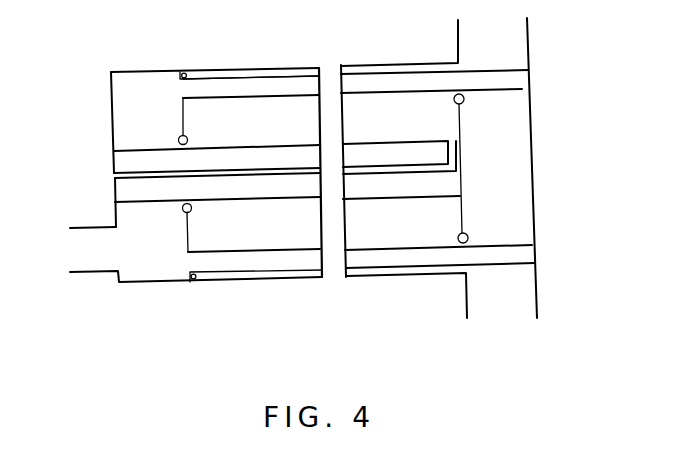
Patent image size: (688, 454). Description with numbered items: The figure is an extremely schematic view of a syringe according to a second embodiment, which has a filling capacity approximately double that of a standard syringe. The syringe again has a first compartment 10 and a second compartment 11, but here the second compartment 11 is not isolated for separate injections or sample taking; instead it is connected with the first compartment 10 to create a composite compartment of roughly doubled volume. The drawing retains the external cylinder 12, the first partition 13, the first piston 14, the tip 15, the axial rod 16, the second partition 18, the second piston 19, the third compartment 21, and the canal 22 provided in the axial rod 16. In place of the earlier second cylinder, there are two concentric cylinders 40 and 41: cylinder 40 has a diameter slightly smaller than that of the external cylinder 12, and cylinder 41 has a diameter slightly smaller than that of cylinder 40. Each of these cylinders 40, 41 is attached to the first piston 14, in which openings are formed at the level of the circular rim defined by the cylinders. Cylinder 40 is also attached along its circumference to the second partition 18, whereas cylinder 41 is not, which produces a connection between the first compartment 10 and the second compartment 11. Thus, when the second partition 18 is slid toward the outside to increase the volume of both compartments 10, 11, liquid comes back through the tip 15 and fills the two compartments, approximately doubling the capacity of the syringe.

The first compartment 10 is at (140, 83).
The second compartment 11 is at (507, 218).
The external cylinder 12 is at (155, 283).
The first partition 13 is at (112, 120).
The first piston 14 is at (183, 122).
The tip 15 is at (90, 273).
The axial rod 16 is at (245, 200).
The second partition 18 is at (530, 128).
The second piston 19 is at (459, 117).
The third compartment 21 is at (362, 222).
The canal 22 is at (400, 170).
The cylinder 40 is at (295, 78).
The cylinder 41 is at (360, 91).